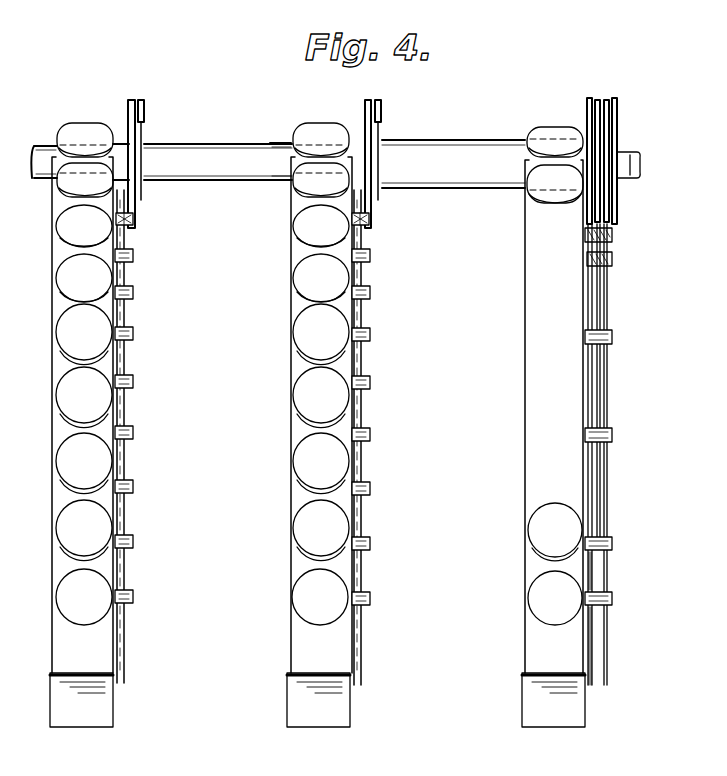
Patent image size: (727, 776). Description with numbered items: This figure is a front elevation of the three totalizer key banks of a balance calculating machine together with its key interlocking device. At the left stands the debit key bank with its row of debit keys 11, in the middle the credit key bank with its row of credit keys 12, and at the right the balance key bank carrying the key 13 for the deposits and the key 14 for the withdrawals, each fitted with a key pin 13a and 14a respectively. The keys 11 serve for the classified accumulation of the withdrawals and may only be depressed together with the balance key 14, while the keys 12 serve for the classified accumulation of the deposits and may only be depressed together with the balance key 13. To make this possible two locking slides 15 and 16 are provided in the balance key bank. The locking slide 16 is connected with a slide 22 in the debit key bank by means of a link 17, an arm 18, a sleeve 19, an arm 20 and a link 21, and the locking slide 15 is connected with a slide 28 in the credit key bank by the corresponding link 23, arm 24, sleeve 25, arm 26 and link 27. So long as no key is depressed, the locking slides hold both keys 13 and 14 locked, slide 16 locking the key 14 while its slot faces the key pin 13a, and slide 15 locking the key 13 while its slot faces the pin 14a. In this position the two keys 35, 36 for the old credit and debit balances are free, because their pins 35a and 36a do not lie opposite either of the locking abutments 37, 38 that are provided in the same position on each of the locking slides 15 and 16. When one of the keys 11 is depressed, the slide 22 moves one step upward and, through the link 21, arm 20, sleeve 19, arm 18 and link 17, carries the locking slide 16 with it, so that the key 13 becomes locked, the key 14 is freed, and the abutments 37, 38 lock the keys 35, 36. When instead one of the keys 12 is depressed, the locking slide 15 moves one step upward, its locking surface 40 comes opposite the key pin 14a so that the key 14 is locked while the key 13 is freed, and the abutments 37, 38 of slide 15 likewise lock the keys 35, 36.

The debit keys 11 is at (63, 258).
The credit keys 12 is at (300, 322).
The key for the deposits 13 is at (541, 133).
The key pin 13a is at (610, 242).
The key for the withdrawals 14 is at (540, 197).
The key pin 14a is at (612, 262).
The locking slide 15 is at (595, 354).
The locking slide 16 is at (609, 314).
The link 17 is at (612, 132).
The arm 18 is at (617, 146).
The sleeve 19 is at (221, 150).
The arm 20 is at (140, 138).
The link 21 is at (137, 186).
The slide 22 is at (128, 268).
The link 23 is at (592, 140).
The arm 24 is at (589, 106).
The sleeve 25 is at (446, 172).
The arm 26 is at (378, 138).
The link 27 is at (372, 192).
The slide 28 is at (358, 403).
The key for the old credit balance 35 is at (535, 538).
The pin 35a is at (612, 543).
The key for the old debit balance 36 is at (535, 602).
The pin 36a is at (612, 600).
The locking abutment 37 is at (592, 572).
The locking abutment 38 is at (592, 628).
The locking surface 40 is at (606, 302).